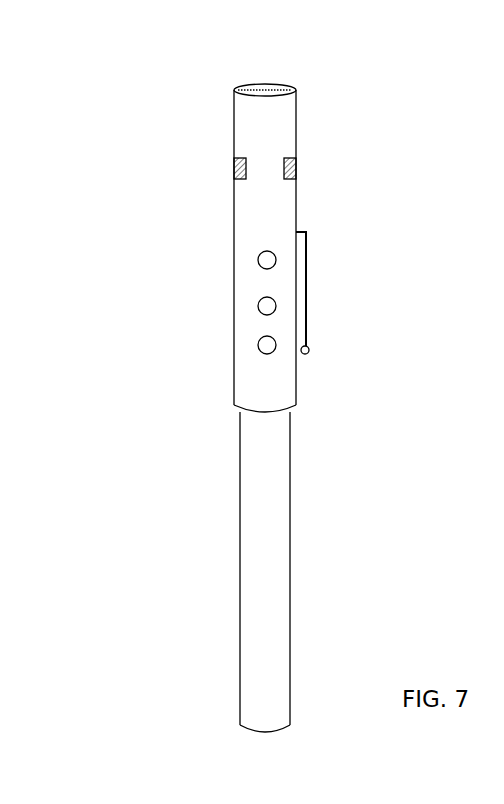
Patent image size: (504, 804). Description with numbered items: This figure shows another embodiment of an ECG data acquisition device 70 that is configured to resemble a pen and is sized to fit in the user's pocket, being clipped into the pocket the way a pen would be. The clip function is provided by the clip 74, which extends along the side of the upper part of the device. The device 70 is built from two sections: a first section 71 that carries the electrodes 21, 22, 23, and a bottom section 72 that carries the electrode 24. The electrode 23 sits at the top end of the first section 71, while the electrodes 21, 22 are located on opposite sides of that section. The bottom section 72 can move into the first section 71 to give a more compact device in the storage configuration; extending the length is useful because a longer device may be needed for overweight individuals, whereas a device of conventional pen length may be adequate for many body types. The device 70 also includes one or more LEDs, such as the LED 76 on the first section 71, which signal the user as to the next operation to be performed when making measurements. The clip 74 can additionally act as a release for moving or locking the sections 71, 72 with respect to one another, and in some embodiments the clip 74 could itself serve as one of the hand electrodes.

The ECG data acquisition device 70 is at (131, 111).
The first section 71 is at (238, 335).
The electrode 23 is at (268, 87).
The electrode 21 is at (235, 168).
The electrode 22 is at (292, 168).
The LED 76 is at (259, 254).
The clip 74 is at (306, 288).
The bottom section 72 is at (280, 553).
The electrode 24 is at (265, 746).